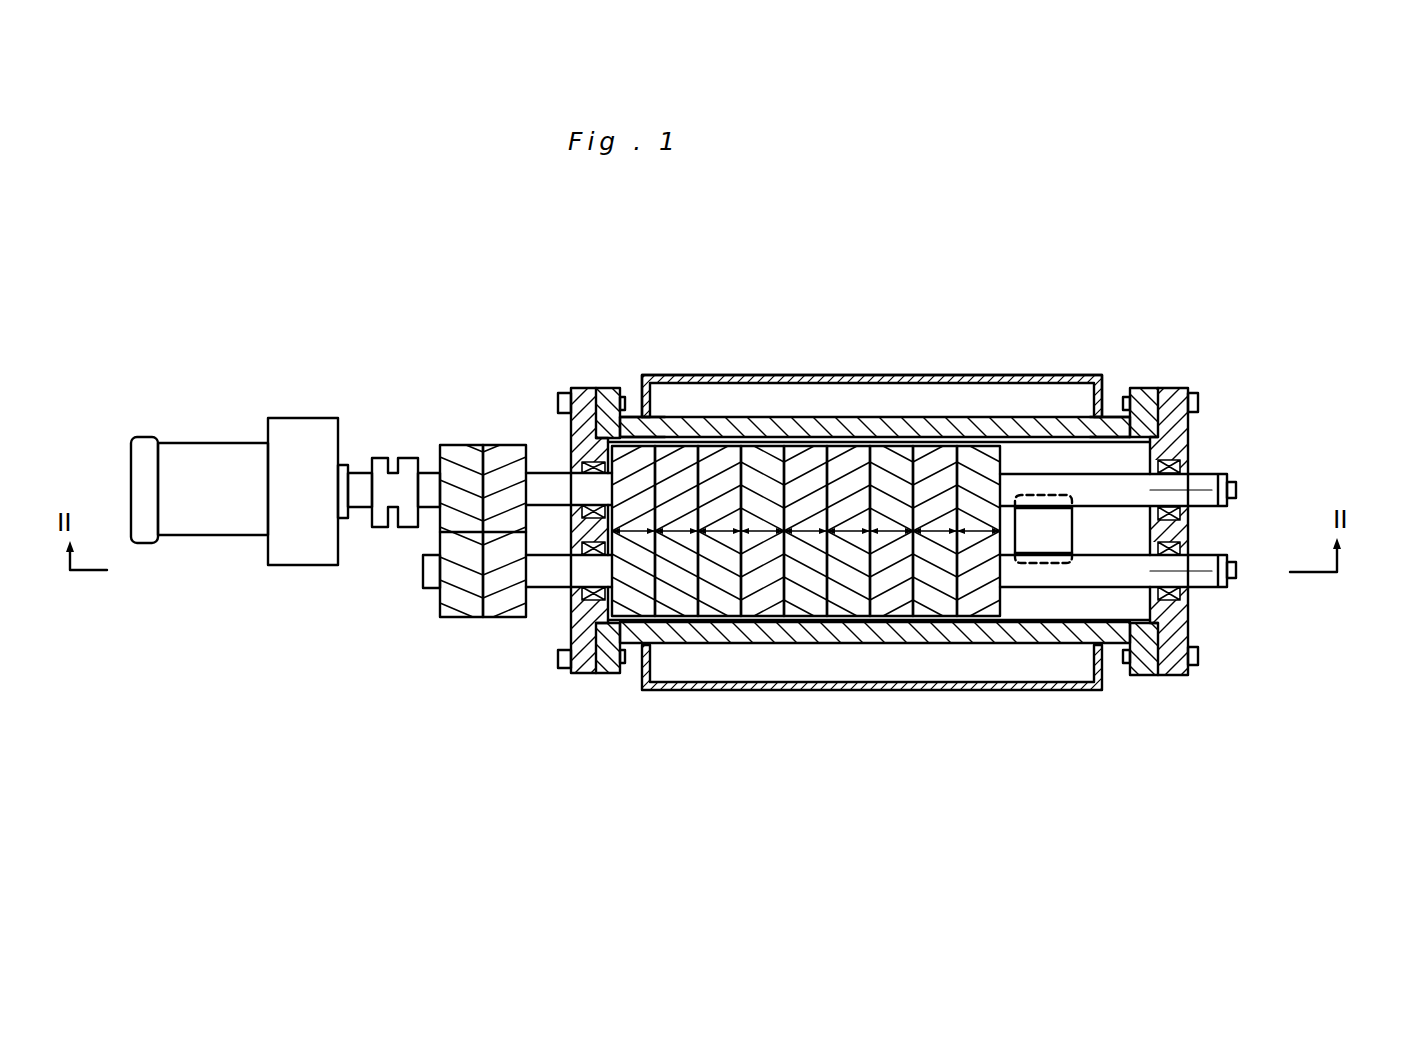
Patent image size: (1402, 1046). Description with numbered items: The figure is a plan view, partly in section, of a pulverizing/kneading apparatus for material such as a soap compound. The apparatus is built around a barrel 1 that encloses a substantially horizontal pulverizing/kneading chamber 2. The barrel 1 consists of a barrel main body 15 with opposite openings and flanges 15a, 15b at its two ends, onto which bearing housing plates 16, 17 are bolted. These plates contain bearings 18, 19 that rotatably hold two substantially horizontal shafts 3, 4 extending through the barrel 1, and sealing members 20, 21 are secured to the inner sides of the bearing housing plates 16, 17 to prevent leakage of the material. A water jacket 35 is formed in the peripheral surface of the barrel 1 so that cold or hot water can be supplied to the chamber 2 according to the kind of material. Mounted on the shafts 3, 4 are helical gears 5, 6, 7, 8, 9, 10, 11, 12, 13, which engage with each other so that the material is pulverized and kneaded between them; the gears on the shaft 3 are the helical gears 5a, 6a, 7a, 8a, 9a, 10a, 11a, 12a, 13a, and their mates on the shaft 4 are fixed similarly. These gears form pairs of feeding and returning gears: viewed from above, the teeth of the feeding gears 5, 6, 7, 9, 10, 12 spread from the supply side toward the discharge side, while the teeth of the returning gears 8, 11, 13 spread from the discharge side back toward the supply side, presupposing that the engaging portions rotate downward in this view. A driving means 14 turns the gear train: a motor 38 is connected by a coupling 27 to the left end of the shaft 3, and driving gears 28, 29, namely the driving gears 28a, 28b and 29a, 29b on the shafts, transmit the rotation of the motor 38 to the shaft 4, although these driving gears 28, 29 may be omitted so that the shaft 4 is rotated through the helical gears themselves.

The barrel 1 is at (1020, 408).
The pulverizing/kneading chamber 2 is at (1102, 460).
The shaft 3 is at (1243, 463).
The shaft 4 is at (1227, 590).
The helical gear 5 is at (622, 620).
The helical gear 6 is at (673, 625).
The helical gear 7 is at (710, 625).
The helical gear 8 is at (758, 625).
The helical gear 9 is at (805, 625).
The helical gear 10 is at (848, 625).
The helical gear 11 is at (893, 625).
The helical gear 12 is at (940, 625).
The helical gear 13 is at (985, 625).
The helical gear 5a is at (630, 416).
The helical gear 6a is at (678, 442).
The helical gear 7a is at (720, 442).
The helical gear 8a is at (760, 442).
The helical gear 9a is at (805, 442).
The helical gear 10a is at (848, 442).
The helical gear 11a is at (895, 440).
The helical gear 12a is at (938, 440).
The helical gear 13a is at (978, 440).
The driving means 14 is at (399, 414).
The barrel main body 15 is at (873, 430).
The flange 15a is at (608, 387).
The flange 15b is at (1140, 395).
The bearing housing plate 16 is at (592, 387).
The bearing housing plate 17 is at (1173, 390).
The bearing 18 is at (578, 462).
The bearing 19 is at (1190, 468).
The sealing member 20 is at (577, 387).
The sealing member 21 is at (1182, 388).
The coupling 27 is at (376, 456).
The driving gear 28 is at (428, 604).
The driving gear 28a is at (455, 460).
The driving gear 28b is at (455, 600).
The driving gear 29 is at (517, 618).
The driving gear 29a is at (500, 452).
The driving gear 29b is at (503, 600).
The water jacket 35 is at (1050, 690).
The motor 38 is at (210, 443).